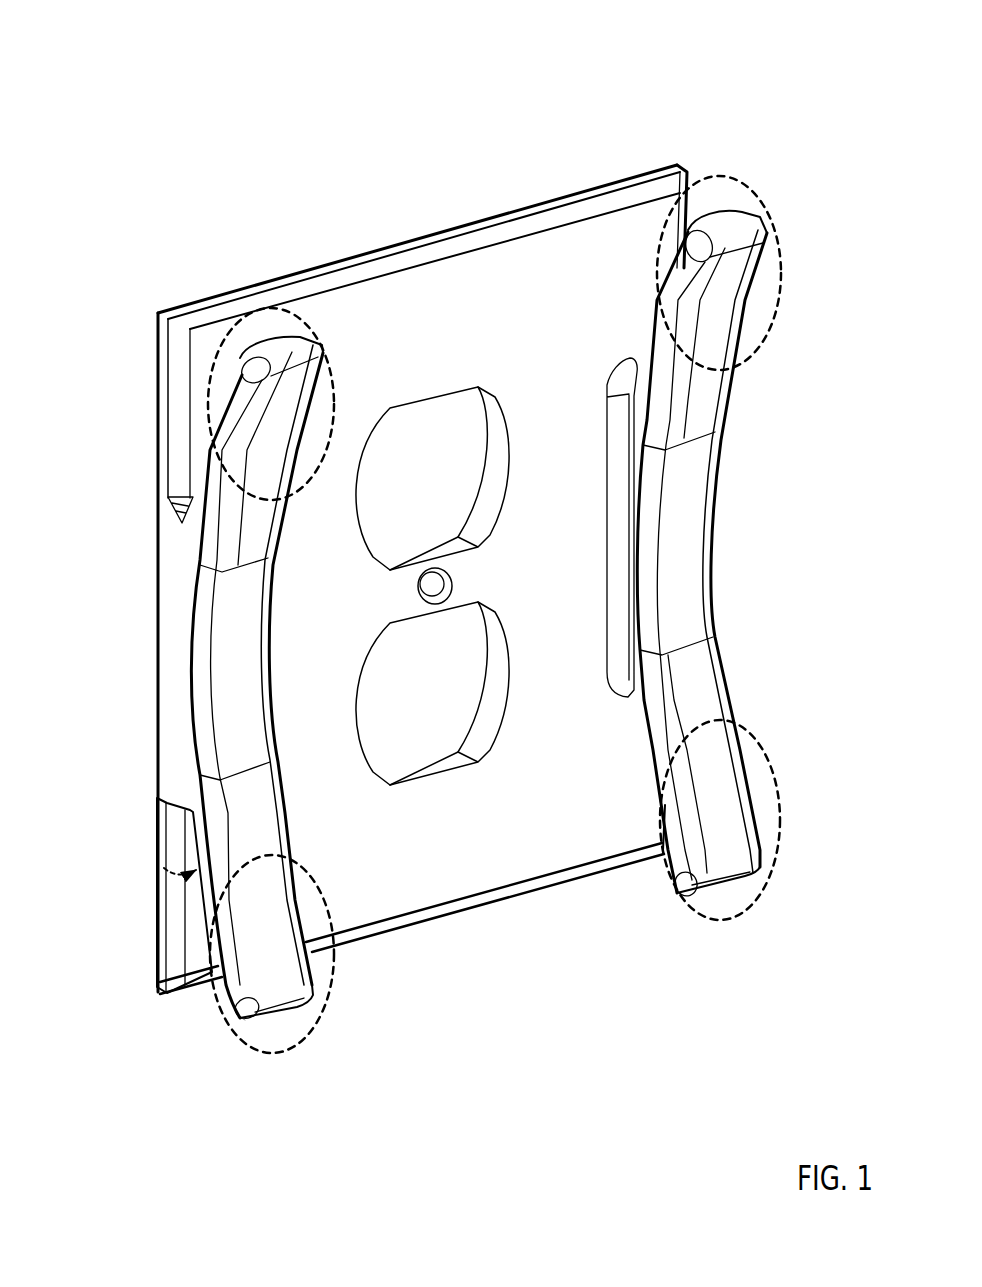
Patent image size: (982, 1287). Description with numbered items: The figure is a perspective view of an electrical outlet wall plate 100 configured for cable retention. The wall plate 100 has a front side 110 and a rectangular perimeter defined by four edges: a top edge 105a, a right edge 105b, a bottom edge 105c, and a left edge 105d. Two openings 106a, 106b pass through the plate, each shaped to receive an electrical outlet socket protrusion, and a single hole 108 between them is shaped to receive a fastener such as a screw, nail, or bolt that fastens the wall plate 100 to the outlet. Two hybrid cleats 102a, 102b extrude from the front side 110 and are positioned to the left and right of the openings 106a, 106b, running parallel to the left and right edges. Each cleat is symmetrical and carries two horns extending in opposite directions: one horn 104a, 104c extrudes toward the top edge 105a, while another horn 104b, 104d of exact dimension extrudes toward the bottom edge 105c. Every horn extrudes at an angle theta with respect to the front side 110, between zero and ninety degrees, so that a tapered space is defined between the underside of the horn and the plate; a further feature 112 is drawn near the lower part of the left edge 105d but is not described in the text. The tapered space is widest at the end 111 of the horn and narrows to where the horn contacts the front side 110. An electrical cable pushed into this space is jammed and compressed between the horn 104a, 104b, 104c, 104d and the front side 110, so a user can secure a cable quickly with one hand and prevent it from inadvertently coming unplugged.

The wall plate 100 is at (442, 605).
The hybrid cleat 102a is at (165, 631).
The hybrid cleat 102b is at (680, 555).
The horn 104a is at (206, 411).
The horn 104b is at (270, 1060).
The horn 104c is at (747, 183).
The horn 104d is at (722, 928).
The top edge 105a is at (456, 200).
The right edge 105b is at (694, 204).
The bottom edge 105c is at (500, 943).
The left edge 105d is at (148, 713).
The opening 106a is at (427, 460).
The opening 106b is at (427, 680).
The hole 108 is at (432, 584).
The front side 110 is at (459, 325).
The end of the horn 111 is at (239, 1008).
The tab 112 is at (172, 798).